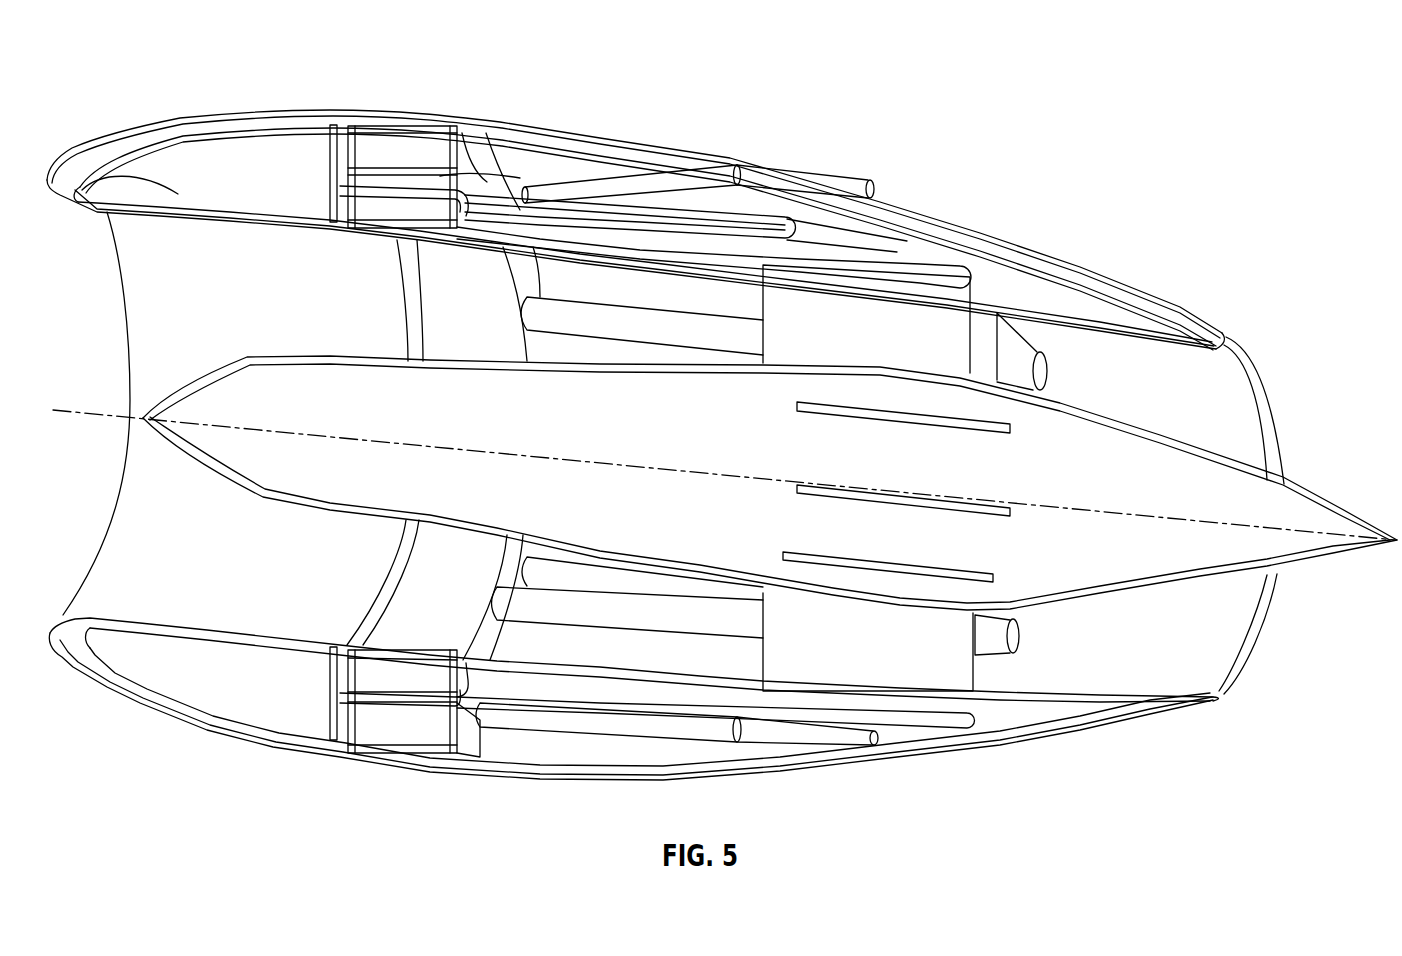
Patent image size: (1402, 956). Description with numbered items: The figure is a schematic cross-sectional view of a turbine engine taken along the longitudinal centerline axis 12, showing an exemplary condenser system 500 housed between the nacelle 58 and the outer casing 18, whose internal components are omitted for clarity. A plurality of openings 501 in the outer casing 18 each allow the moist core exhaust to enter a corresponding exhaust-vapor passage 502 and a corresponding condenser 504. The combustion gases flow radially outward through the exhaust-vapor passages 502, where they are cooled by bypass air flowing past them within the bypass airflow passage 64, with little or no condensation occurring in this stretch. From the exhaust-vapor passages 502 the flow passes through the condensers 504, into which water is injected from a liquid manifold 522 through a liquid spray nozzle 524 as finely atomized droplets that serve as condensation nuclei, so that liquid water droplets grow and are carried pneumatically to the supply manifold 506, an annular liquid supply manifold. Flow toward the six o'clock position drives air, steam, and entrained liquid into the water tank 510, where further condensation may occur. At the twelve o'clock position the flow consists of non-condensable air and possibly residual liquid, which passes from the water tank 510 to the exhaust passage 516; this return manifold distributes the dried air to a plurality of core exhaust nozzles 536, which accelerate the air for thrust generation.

The condenser system 500 is at (722, 405).
The water tank 510 is at (178, 141).
The liquid manifold 522 is at (325, 143).
The exhaust passage 516 is at (430, 160).
The liquid spray nozzle 524 is at (507, 172).
The core exhaust nozzle 536 is at (843, 188).
The exhaust-vapor passage 502 is at (957, 290).
The condenser 504 is at (952, 323).
The nacelle 58 is at (1143, 300).
The bypass airflow passage 64 is at (268, 297).
The supply manifold 506 is at (373, 237).
The outer casing 18 is at (1203, 448).
The longitudinal centerline axis 12 is at (1123, 512).
The opening 501 is at (940, 423).